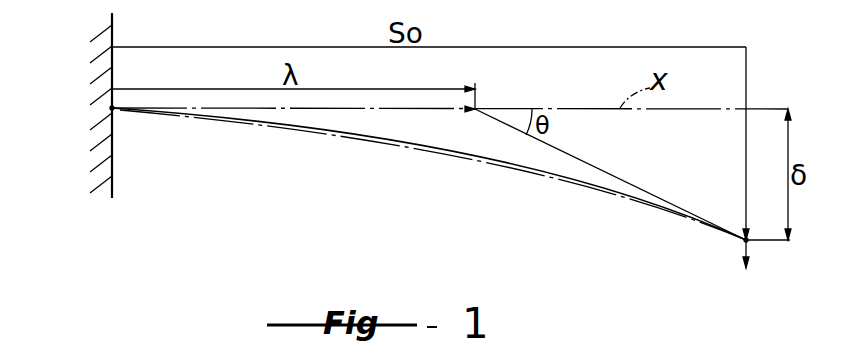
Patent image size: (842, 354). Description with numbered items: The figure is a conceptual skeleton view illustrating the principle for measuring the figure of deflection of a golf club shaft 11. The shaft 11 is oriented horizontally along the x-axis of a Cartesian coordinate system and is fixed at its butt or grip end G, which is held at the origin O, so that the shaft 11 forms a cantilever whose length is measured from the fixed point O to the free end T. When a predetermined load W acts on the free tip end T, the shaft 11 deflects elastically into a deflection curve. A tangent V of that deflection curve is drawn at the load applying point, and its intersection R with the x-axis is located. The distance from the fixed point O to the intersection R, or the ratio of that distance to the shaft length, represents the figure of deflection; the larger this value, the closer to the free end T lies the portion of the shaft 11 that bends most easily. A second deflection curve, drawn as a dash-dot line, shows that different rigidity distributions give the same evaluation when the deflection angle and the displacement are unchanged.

The golf club shaft 11 is at (391, 137).
The butt end (grip end) G is at (112, 108).
The origin O is at (112, 108).
The intersection R is at (480, 102).
The tangent V is at (603, 160).
The free end (tip end) T is at (742, 241).
The load W is at (747, 252).